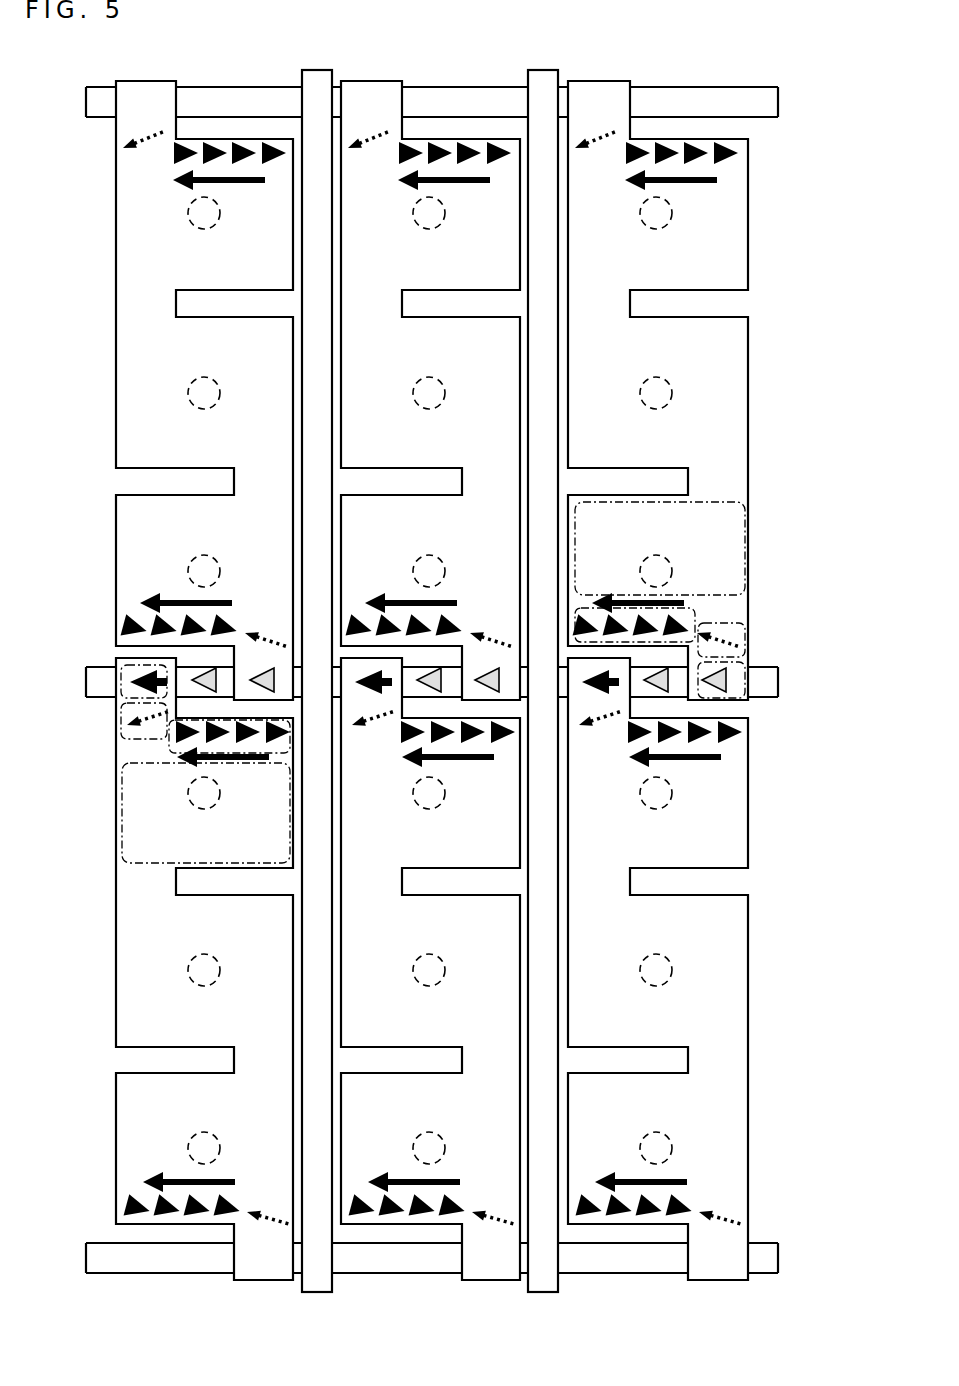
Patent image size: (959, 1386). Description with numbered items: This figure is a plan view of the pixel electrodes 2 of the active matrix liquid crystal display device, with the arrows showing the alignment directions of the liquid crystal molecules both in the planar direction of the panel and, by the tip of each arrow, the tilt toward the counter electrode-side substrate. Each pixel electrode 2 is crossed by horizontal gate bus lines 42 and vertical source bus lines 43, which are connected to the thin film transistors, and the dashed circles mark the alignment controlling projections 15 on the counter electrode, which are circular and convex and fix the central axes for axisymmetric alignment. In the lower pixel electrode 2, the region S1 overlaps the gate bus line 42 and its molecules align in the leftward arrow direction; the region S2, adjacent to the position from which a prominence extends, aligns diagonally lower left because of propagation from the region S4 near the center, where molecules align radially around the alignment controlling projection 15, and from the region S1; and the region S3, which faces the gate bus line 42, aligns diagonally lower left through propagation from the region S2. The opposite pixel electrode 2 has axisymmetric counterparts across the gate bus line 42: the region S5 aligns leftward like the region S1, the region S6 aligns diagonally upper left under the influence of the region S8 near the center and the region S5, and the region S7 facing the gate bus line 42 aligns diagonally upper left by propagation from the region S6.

The pixel electrode 2 is at (732, 243).
The alignment controlling projection 15 is at (668, 798).
The gate bus line 42 is at (765, 102).
The source bus line 43 is at (312, 90).
The region S1 is at (121, 683).
The region S2 is at (121, 720).
The region S3 is at (168, 740).
The region S4 is at (122, 826).
The region S5 is at (745, 681).
The region S6 is at (745, 638).
The region S7 is at (695, 614).
The region S8 is at (745, 537).